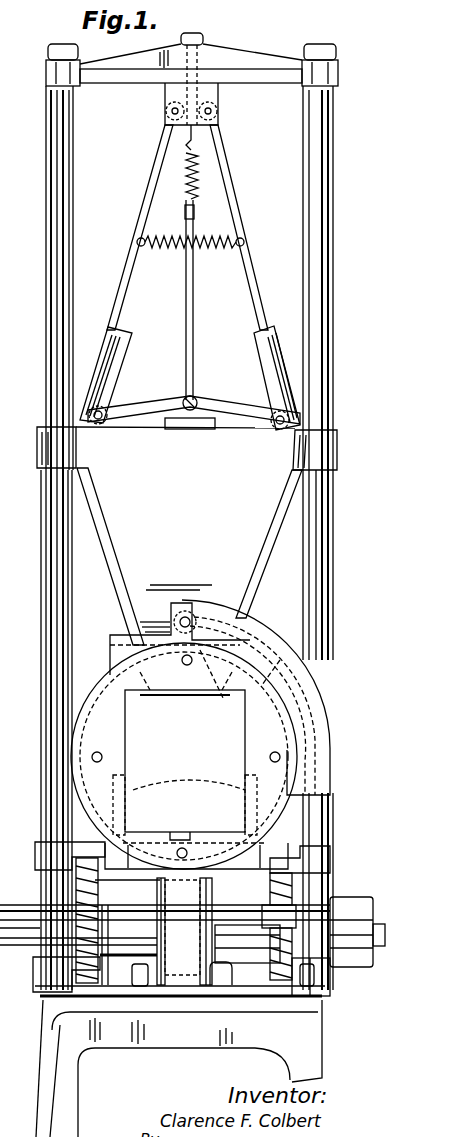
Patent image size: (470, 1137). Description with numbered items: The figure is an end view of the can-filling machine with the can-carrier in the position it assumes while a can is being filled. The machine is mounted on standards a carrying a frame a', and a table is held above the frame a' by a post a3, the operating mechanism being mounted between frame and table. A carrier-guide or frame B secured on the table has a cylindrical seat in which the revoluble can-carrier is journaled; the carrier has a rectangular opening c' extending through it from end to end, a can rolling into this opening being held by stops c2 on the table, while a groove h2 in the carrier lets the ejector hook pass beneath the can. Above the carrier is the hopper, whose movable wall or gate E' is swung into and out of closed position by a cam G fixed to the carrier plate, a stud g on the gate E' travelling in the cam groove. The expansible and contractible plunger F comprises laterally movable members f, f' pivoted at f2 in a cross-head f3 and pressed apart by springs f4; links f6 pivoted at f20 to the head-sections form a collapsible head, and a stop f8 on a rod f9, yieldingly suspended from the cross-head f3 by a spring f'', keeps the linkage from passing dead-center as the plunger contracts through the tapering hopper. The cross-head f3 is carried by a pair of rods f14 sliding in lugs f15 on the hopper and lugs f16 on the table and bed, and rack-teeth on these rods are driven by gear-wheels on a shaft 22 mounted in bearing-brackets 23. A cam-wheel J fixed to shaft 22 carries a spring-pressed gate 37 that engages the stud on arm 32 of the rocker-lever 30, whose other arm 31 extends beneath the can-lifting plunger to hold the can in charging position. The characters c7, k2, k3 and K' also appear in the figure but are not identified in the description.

The cross-head f3 is at (250, 56).
The pivot f2 is at (170, 111).
The spring f'' is at (218, 162).
The expansible and contractible plunger F is at (181, 206).
The springs f4 is at (238, 248).
The rod f9 is at (198, 300).
The plunger rods f14 is at (333, 292).
The plunger-member f is at (108, 375).
The plunger-member f' is at (264, 378).
The pivot f20 is at (92, 416).
The lugs f15 is at (338, 442).
The links f6 is at (148, 433).
The stop f8 is at (198, 430).
The movable hopper wall or gate E' is at (189, 556).
The stud g is at (185, 612).
The cam G is at (226, 608).
The rectangular opening c' is at (165, 718).
The carrier-guide B is at (112, 655).
The rod c7 is at (330, 618).
The stops c2 is at (184, 756).
The groove h2 is at (200, 805).
The worm gear k2 is at (82, 866).
The arm k3 is at (282, 858).
The cam-wheel J is at (300, 860).
The lugs f16 is at (36, 850).
The spring-pressed gate 37 is at (300, 908).
The bearing-brackets 23 is at (333, 905).
The shaft 22 is at (128, 896).
The post a3 is at (218, 931).
The frame a' is at (32, 1029).
The standards a is at (180, 1050).
The gear K' is at (119, 1010).
The arm 31 is at (186, 1024).
The lever 30 is at (265, 985).
The arm 32 is at (290, 1005).